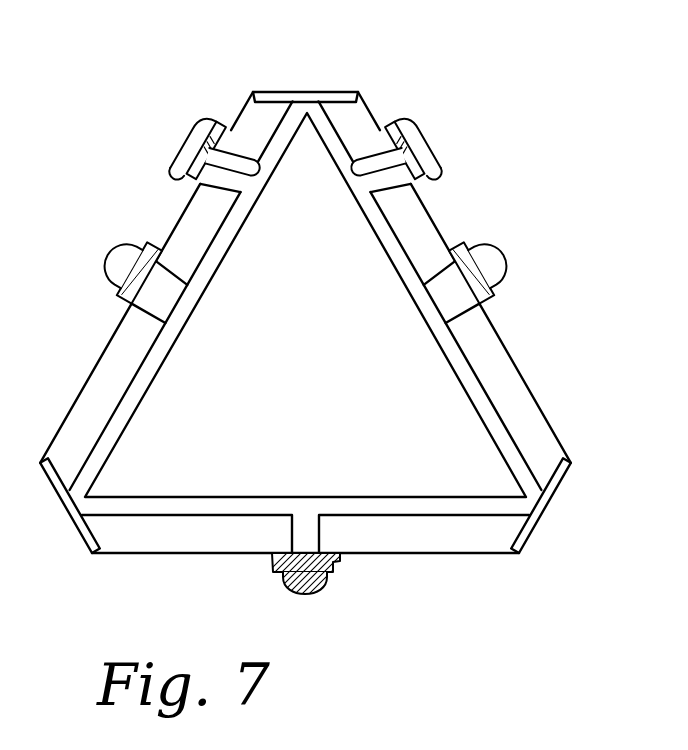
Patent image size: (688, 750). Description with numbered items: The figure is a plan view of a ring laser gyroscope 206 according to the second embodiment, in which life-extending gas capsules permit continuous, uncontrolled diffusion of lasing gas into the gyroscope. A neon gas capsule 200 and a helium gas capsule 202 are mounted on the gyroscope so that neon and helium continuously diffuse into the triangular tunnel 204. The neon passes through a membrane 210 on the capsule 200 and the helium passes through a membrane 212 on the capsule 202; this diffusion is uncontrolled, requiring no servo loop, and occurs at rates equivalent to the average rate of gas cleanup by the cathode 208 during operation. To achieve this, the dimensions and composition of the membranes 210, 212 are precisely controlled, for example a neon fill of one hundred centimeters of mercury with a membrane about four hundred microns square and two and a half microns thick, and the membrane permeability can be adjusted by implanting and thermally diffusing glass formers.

The neon gas capsule 200 is at (207, 120).
The helium gas capsule 202 is at (398, 124).
The triangular tunnel 204 is at (468, 378).
The ring laser gyroscope 206 is at (333, 476).
The cathode 208 is at (340, 565).
The membrane 210 is at (188, 182).
The membrane 212 is at (430, 195).